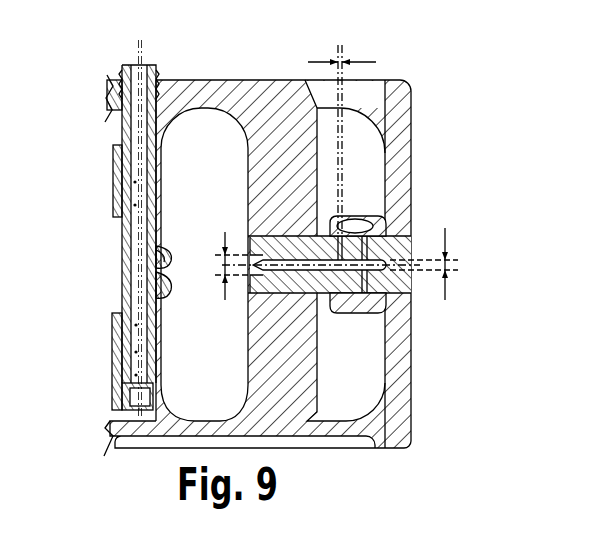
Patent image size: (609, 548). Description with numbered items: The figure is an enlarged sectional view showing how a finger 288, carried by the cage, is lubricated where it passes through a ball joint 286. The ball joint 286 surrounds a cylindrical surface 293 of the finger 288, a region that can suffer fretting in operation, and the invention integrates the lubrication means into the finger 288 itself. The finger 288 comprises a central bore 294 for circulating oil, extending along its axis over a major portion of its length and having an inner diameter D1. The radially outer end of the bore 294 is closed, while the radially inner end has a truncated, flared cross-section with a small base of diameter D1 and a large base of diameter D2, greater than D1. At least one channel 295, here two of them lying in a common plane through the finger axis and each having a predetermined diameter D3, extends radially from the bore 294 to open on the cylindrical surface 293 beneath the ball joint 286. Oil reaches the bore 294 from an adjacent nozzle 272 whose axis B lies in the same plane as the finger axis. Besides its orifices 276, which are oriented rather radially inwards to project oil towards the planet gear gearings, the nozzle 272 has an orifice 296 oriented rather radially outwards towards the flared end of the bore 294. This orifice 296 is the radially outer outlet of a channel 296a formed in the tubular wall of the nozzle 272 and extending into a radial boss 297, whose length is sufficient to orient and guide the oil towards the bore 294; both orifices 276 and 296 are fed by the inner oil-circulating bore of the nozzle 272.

The axis of nozzle B is at (140, 53).
The nozzle 272 is at (157, 340).
The orifices 276 is at (136, 375).
The ball joint 286 is at (335, 220).
The finger 288 is at (388, 265).
The cylindrical surface 293 is at (378, 296).
The central bore 294 is at (295, 283).
The channel 295 is at (372, 230).
The orifice 296 is at (148, 268).
The channel for the passage of oil 296a is at (158, 269).
The radial boss 297 is at (163, 298).
The inner diameter of bore D1 is at (434, 275).
The diameter of large base D2 is at (219, 278).
The diameter of channel D3 is at (355, 134).